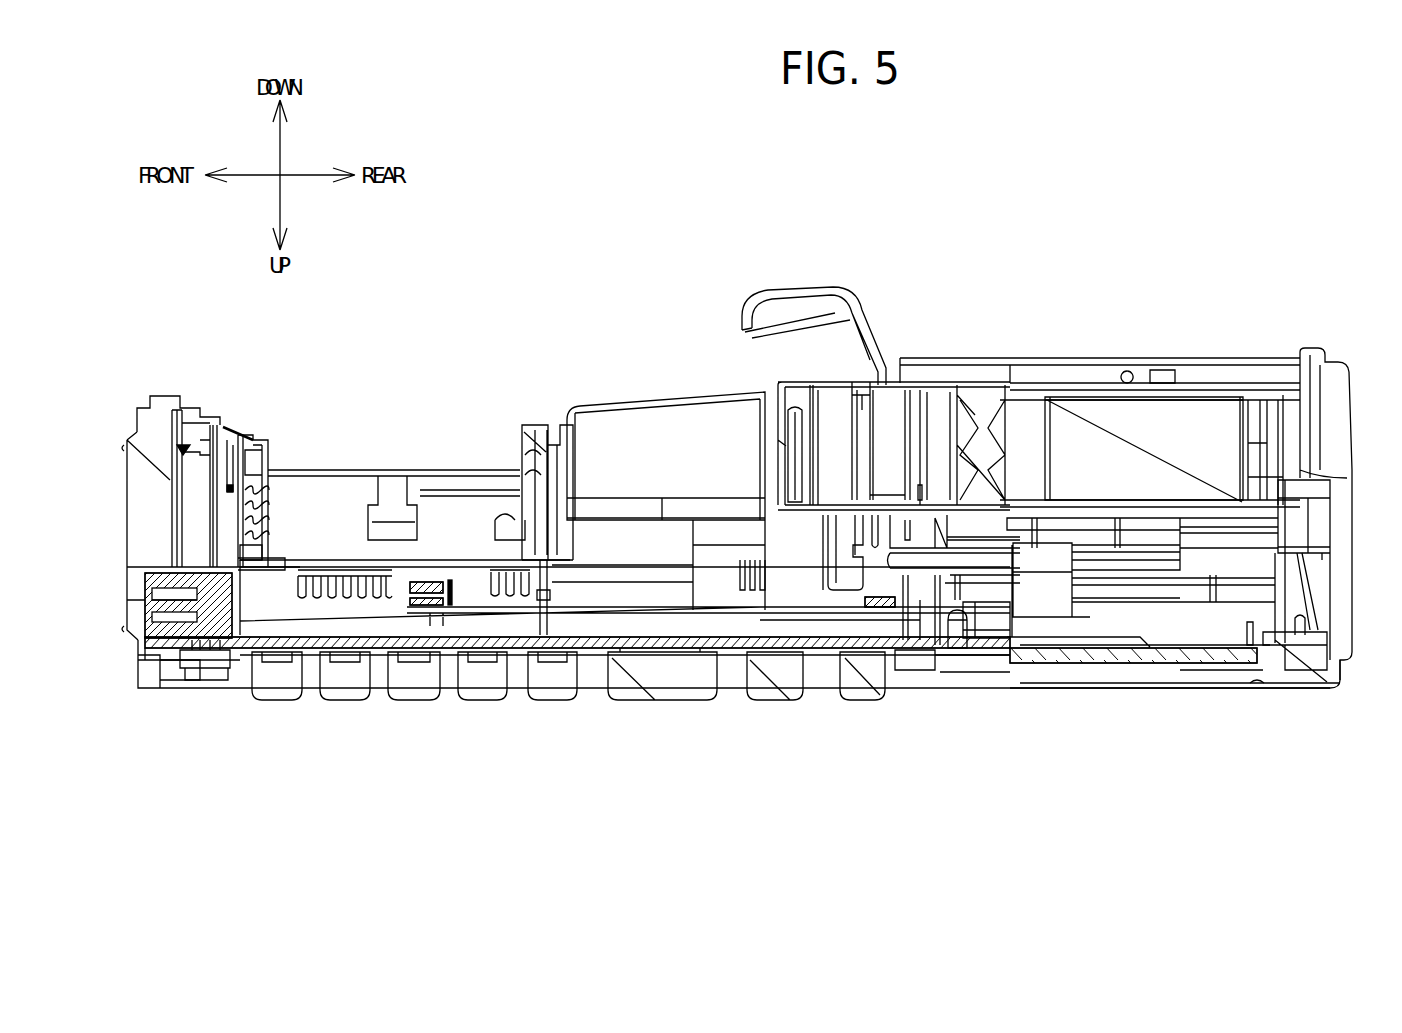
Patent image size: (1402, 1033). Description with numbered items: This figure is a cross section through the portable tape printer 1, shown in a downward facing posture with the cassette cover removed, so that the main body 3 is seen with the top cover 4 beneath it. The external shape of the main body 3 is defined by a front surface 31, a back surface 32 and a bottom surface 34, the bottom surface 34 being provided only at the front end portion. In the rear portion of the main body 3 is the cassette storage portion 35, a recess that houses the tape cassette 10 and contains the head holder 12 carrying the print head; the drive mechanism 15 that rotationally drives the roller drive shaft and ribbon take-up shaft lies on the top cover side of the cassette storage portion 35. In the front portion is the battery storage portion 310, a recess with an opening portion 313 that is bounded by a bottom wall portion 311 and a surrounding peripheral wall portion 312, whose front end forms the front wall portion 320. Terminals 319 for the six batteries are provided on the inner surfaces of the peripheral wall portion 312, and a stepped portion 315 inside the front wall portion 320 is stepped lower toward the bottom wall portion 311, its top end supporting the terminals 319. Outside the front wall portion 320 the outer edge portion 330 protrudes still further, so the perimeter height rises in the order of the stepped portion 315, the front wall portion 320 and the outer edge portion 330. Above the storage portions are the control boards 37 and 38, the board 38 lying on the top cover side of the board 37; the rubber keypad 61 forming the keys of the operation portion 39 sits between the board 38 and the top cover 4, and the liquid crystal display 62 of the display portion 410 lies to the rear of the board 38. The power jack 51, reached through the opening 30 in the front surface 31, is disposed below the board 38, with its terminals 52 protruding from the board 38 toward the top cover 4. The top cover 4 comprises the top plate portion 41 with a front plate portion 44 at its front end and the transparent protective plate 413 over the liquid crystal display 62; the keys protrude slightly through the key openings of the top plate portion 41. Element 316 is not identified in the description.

The printer 1 is at (846, 193).
The main body 3 is at (1329, 335).
The top cover 4 is at (1318, 695).
The tape cassette 10 is at (1115, 388).
The head holder 12 is at (1023, 380).
The drive mechanism 15 is at (1230, 569).
The opening 30 is at (126, 580).
The front surface 31 is at (125, 503).
The back surface 32 is at (1347, 428).
The bottom surface 34 is at (148, 395).
The cassette storage portion 35 is at (1058, 352).
The board 37 is at (648, 607).
The board 38 is at (578, 622).
The operation portion 39 is at (562, 713).
The top plate portion 41 is at (900, 680).
The front plate portion 44 is at (137, 668).
The power jack 51 is at (150, 640).
The terminals 52 is at (210, 660).
The rubber keypad 61 is at (690, 680).
The liquid crystal display 62 is at (1091, 660).
The battery storage portion 310 is at (401, 456).
The bottom wall portion 311 is at (308, 542).
The peripheral wall portion 312 is at (455, 490).
The opening portion 313 is at (528, 418).
The stepped portion 315 is at (268, 445).
The latch member 316 is at (250, 430).
The terminals 319 is at (288, 461).
The front wall portion 320 is at (230, 404).
The outer edge portion 330 is at (183, 380).
The display portion 410 is at (1150, 710).
The protective plate 413 is at (1195, 693).